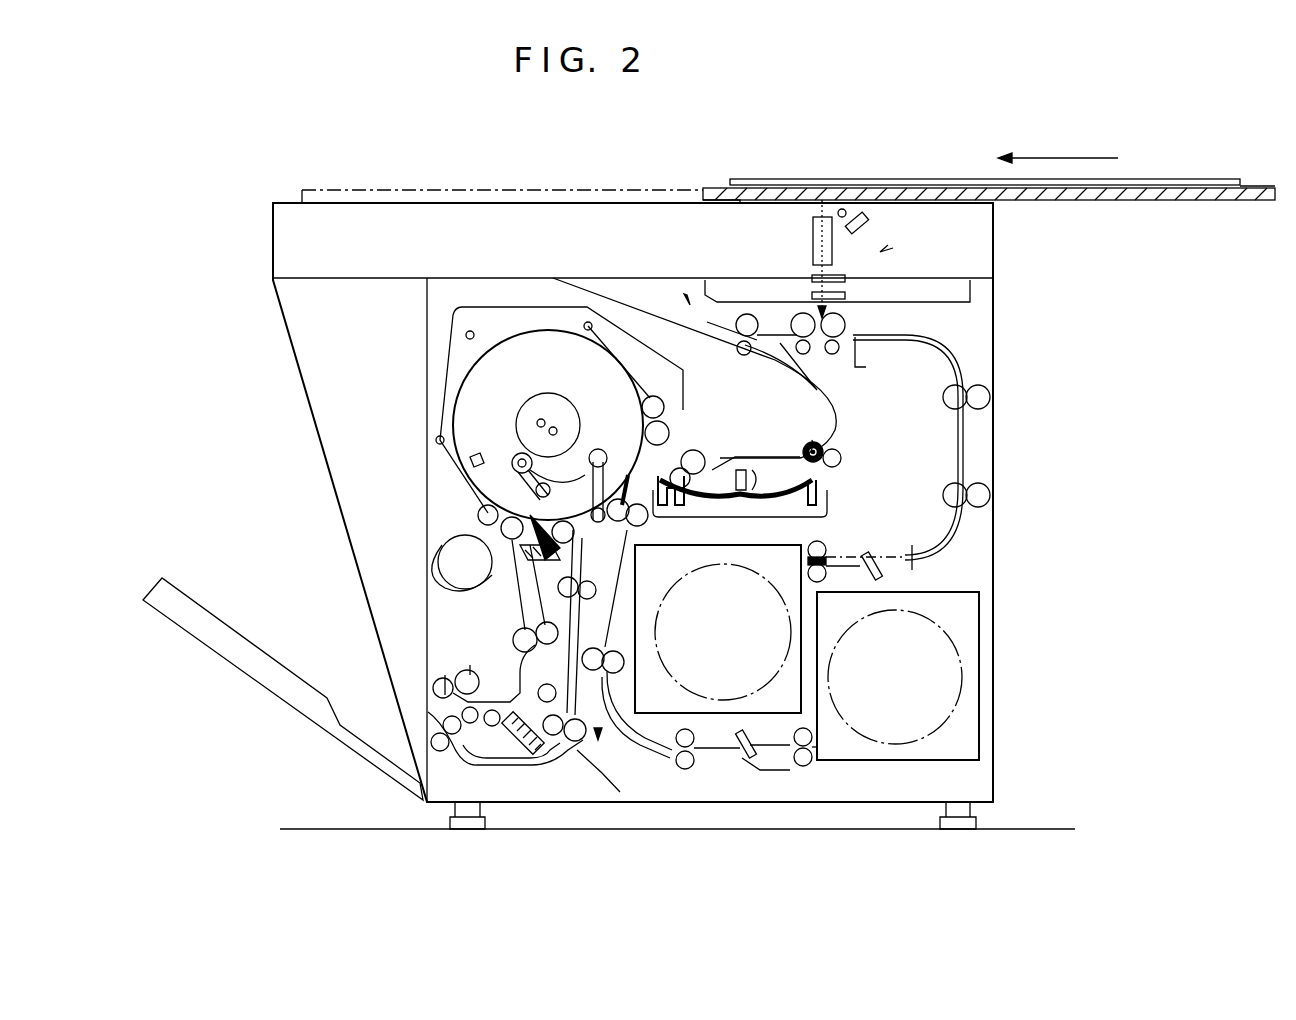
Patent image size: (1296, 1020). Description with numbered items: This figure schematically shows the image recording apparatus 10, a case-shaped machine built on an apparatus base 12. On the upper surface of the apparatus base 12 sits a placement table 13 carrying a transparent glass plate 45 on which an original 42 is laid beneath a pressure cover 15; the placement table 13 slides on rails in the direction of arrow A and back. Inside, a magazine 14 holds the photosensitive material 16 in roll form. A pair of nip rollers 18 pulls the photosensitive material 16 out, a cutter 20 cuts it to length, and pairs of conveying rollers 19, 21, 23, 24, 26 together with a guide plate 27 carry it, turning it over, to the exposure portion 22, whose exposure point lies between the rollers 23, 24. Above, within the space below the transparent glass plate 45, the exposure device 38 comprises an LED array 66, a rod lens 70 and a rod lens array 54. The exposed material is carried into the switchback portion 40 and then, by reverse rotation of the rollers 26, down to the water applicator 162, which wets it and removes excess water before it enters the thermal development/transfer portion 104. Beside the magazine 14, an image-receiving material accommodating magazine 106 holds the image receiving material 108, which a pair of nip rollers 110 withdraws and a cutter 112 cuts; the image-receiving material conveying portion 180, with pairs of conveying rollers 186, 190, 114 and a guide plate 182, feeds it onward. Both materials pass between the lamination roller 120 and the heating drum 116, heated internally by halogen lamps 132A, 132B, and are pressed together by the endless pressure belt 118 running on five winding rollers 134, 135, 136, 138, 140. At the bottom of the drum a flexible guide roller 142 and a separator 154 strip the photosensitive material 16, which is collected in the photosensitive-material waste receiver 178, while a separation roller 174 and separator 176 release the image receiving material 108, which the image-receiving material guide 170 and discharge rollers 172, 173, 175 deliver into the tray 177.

The image recording apparatus 10 is at (450, 174).
The apparatus base 12 is at (1006, 757).
The placement table 13 is at (720, 188).
The magazine 14 is at (650, 718).
The pressure cover 15 is at (800, 179).
The photosensitive material 16 is at (803, 768).
The pair of nip rollers 18 is at (820, 548).
The pair of conveying rollers 19 is at (962, 490).
The cutter 20 is at (872, 552).
The pair of conveying rollers 21 is at (962, 392).
The exposure portion 22 is at (823, 305).
The pair of conveying rollers 23 is at (858, 368).
The pair of conveying rollers 24 is at (828, 388).
The pair of conveying rollers 26 is at (750, 314).
The guide plate 27 is at (950, 555).
The exposure device 38 is at (888, 245).
The switchback portion 40 is at (687, 300).
The original 42 is at (1170, 186).
The transparent glass plate 45 is at (960, 188).
The rod lens array 54 is at (813, 243).
The LED array 66 is at (862, 215).
The rod lens 70 is at (840, 210).
The thermal development/transfer portion 104 is at (433, 393).
The image-receiving material accommodating magazine 106 is at (979, 625).
The image receiving material 108 is at (960, 700).
The pair of nip rollers 110 is at (812, 748).
The cutter 112 is at (748, 765).
The pair of conveying rollers 114 is at (650, 520).
The heating drum 116 is at (520, 332).
The endless pressure belt 118 is at (565, 332).
The lamination roller 120 is at (668, 430).
The halogen lamp 132A is at (538, 421).
The halogen lamp 132B is at (557, 429).
The winding roller 134 is at (664, 405).
The winding roller 135 is at (436, 438).
The winding roller 136 is at (591, 324).
The winding roller 138 is at (470, 331).
The winding roller 140 is at (470, 488).
The flexible guide roller 142 is at (478, 522).
The separator 154 is at (480, 585).
The water applicator 162 is at (772, 439).
The image-receiving material guide 170 is at (578, 760).
The pair of image-receiving material discharge rollers 172 is at (568, 560).
The pair of image-receiving material discharge rollers 173 is at (575, 762).
The separation roller 174 is at (580, 550).
The pair of image-receiving material discharge rollers 175 is at (432, 738).
The separator 176 is at (600, 545).
The tray 177 is at (248, 640).
The photosensitive-material waste receiver 178 is at (322, 470).
The image-receiving material conveying portion 180 is at (598, 740).
The guide plate 182 is at (670, 760).
The pair of conveying rollers 186 is at (650, 748).
The pair of conveying rollers 190 is at (688, 770).
The arrow A direction A is at (1053, 155).